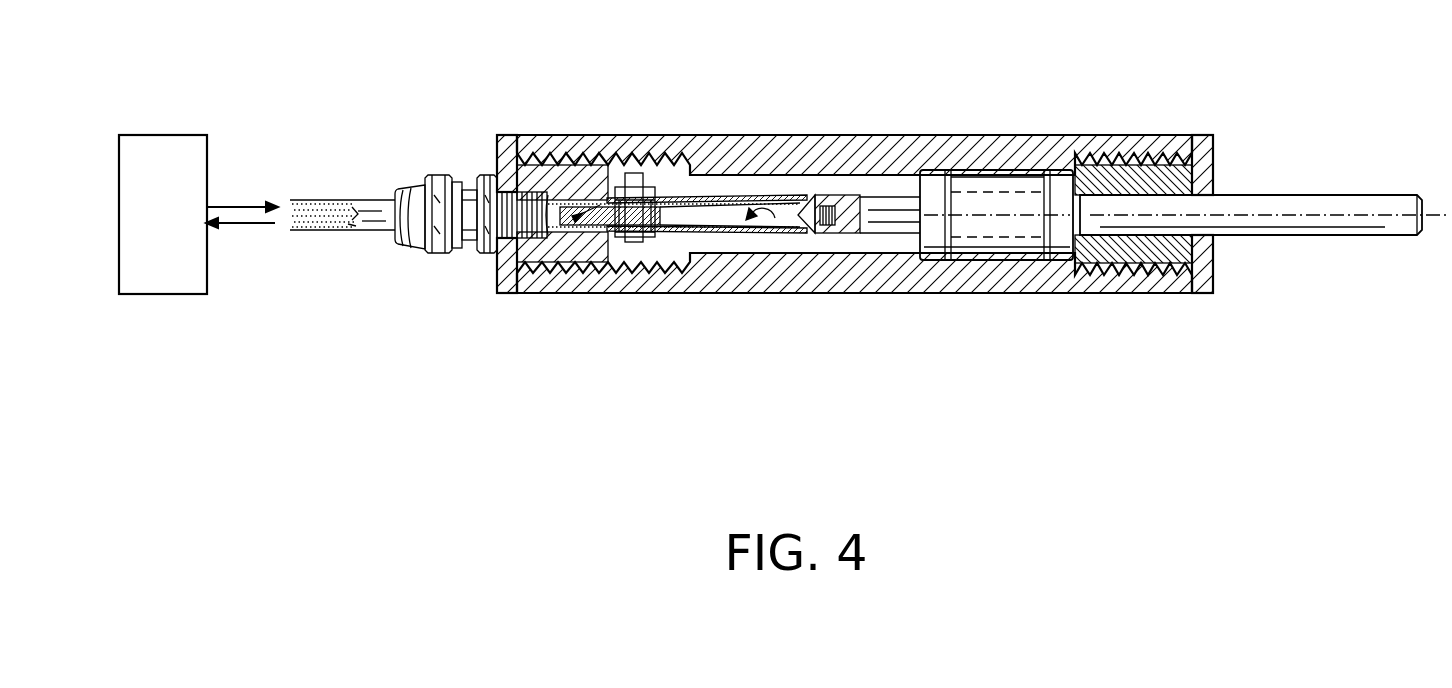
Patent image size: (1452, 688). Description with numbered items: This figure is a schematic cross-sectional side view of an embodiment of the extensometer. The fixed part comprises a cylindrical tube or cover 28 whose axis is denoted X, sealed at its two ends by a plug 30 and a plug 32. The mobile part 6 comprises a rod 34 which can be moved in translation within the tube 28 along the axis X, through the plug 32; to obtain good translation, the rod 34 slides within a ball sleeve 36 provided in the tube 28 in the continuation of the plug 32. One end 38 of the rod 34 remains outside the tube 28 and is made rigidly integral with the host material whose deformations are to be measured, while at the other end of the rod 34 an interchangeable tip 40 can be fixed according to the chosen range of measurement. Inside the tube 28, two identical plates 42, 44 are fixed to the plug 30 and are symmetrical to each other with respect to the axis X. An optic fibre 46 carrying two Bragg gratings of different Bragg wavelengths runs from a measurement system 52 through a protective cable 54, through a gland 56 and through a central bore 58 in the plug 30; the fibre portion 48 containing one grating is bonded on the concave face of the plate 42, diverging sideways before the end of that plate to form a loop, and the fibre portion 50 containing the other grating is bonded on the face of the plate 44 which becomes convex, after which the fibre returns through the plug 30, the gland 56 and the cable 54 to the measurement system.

The mobile part 6 is at (1362, 163).
The tube 28 is at (998, 153).
The plug 30 is at (503, 148).
The plug 32 is at (1200, 255).
The rod 34 is at (1082, 260).
The ball sleeve 36 is at (1037, 185).
The end of the rod 38 is at (1270, 188).
The tip 40 is at (830, 192).
The plate 42 is at (804, 196).
The plate 44 is at (797, 236).
The optic fibre 46 is at (330, 224).
The portion of fibre 48 is at (740, 188).
The portion of fibre 50 is at (770, 235).
The measurement system 52 is at (200, 275).
The protective cable 54 is at (362, 205).
The gland 56 is at (452, 190).
The central bore 58 is at (603, 238).
The axis X is at (1437, 218).